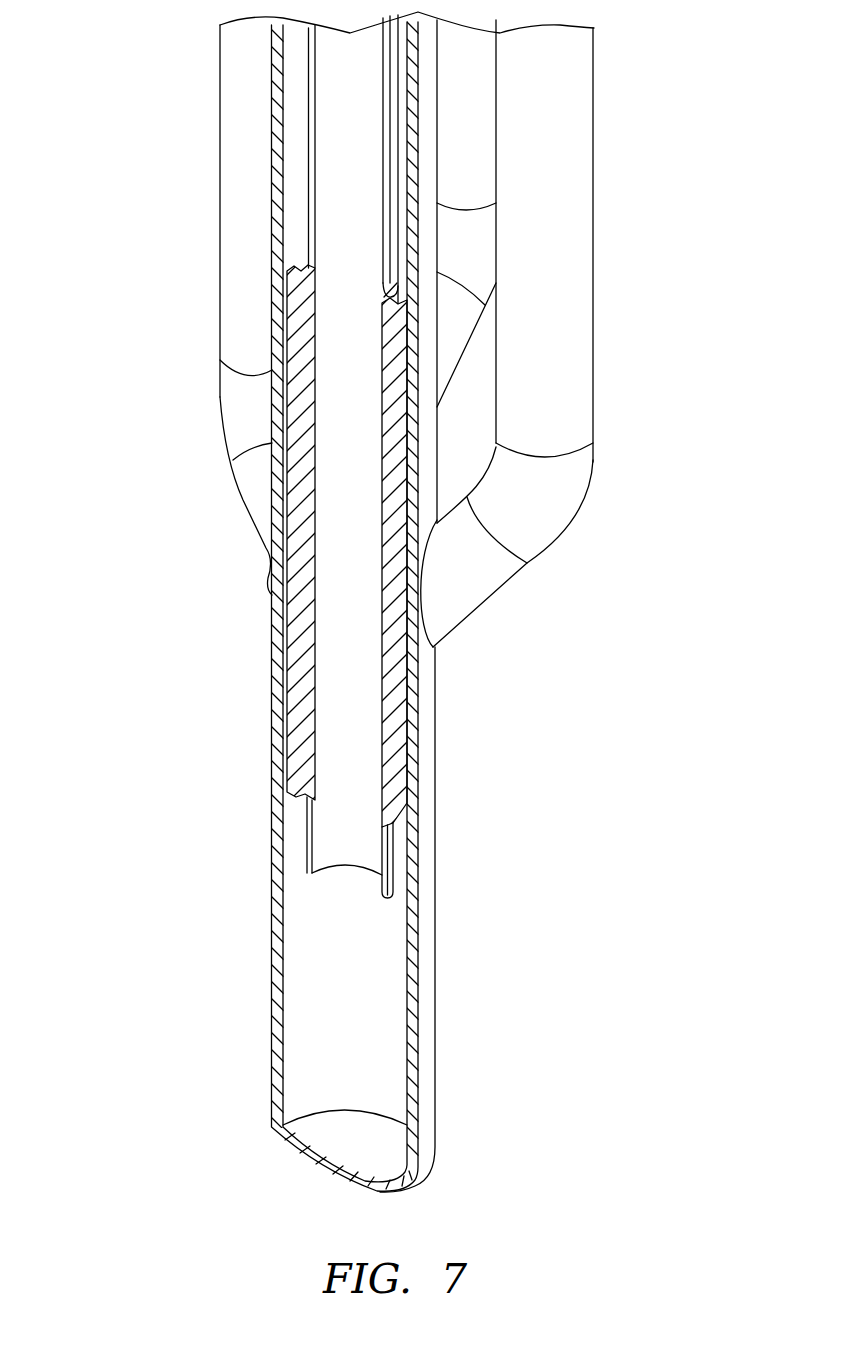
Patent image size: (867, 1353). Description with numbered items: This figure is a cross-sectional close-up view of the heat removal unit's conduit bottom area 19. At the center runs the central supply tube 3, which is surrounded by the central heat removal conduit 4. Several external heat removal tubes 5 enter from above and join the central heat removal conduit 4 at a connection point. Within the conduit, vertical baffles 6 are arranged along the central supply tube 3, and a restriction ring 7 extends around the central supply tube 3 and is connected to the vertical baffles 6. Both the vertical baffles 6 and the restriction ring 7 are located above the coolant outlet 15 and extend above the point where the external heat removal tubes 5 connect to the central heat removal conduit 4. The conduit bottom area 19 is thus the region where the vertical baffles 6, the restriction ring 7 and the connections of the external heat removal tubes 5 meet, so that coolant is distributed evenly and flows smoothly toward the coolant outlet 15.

The central supply tube 3 is at (393, 865).
The central heat removal conduit 4 is at (428, 772).
The external heat removal tube 5 is at (240, 157).
The vertical baffles 6 is at (298, 636).
The restriction ring 7 is at (398, 279).
The coolant outlet 15 is at (353, 856).
The conduit bottom area 19 is at (178, 267).